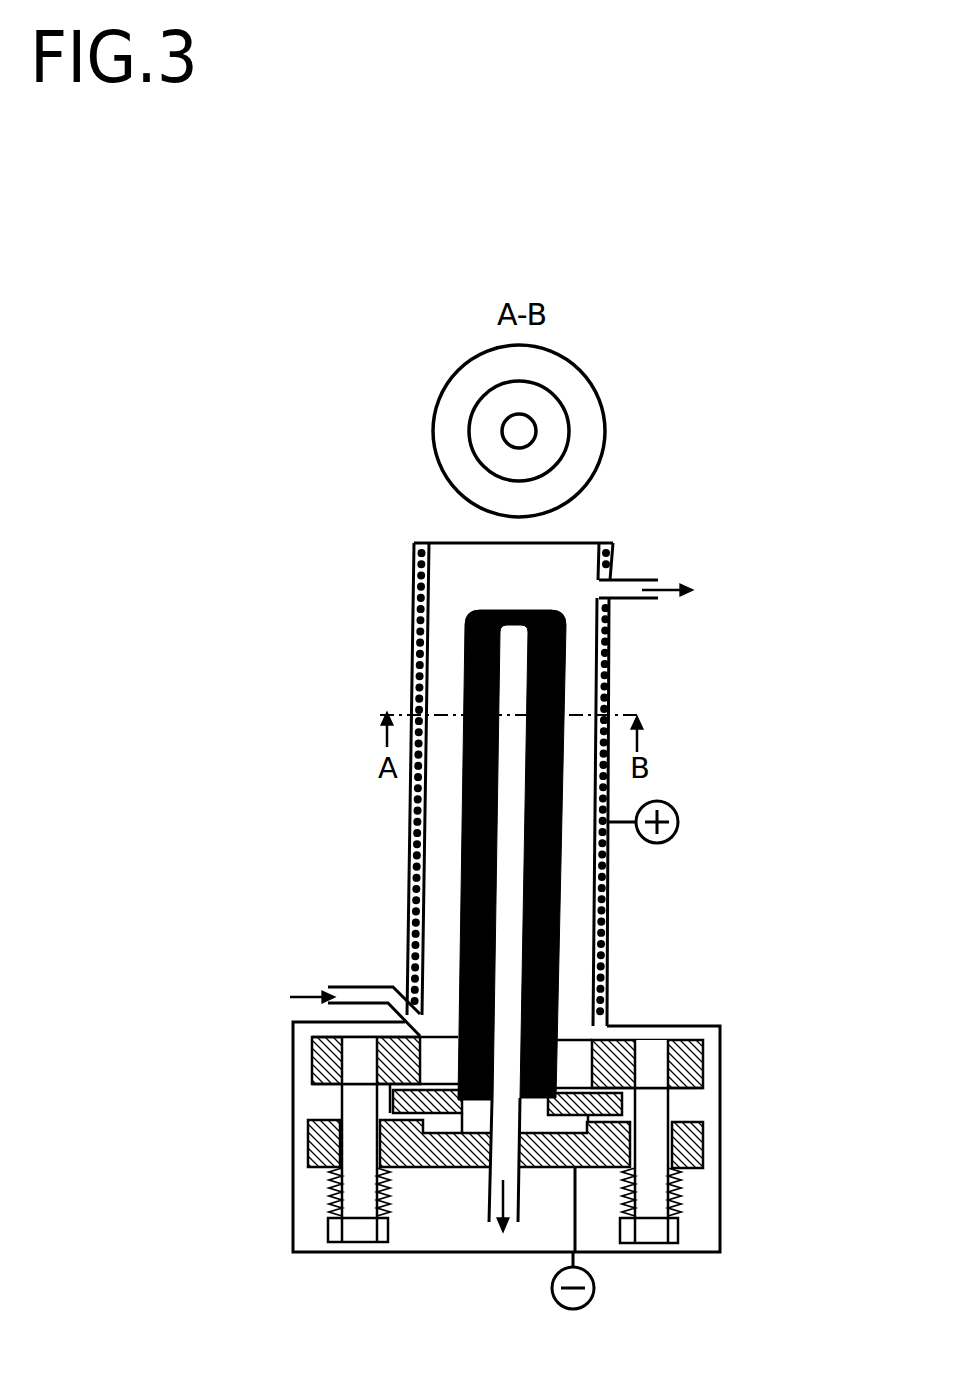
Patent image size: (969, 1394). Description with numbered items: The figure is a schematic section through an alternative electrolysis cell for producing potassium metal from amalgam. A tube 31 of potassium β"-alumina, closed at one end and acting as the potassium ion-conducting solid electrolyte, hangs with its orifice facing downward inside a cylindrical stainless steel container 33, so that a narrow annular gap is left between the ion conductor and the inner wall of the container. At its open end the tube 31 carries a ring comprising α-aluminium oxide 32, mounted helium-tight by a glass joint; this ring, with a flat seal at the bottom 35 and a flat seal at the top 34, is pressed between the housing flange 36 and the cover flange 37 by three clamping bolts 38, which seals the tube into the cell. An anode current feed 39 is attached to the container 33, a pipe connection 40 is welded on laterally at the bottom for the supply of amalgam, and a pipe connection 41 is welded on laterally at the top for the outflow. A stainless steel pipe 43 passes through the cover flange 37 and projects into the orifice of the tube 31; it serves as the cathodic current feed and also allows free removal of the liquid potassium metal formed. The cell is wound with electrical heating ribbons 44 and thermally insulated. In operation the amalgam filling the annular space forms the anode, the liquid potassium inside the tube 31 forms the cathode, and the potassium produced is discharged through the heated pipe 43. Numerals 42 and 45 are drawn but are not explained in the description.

The tube 31 is at (540, 897).
The ring comprising α-aluminium oxide 32 is at (606, 1106).
The cylindrical stainless steel container 33 is at (612, 665).
The flat seal at the top 34 is at (606, 1088).
The flat seal at the bottom 35 is at (620, 1135).
The housing flange 36 is at (312, 1058).
The cover flange 37 is at (308, 1150).
The clamping bolts 38 is at (352, 1232).
The anode current feed 39 is at (678, 815).
The pipe connection 40 is at (312, 995).
The pipe connection 41 is at (662, 591).
The negative terminal 42 is at (592, 1302).
The stainless steel pipe 43 is at (495, 1203).
The electrical heating ribbons 44 is at (410, 792).
The cooling passage 45 is at (414, 570).